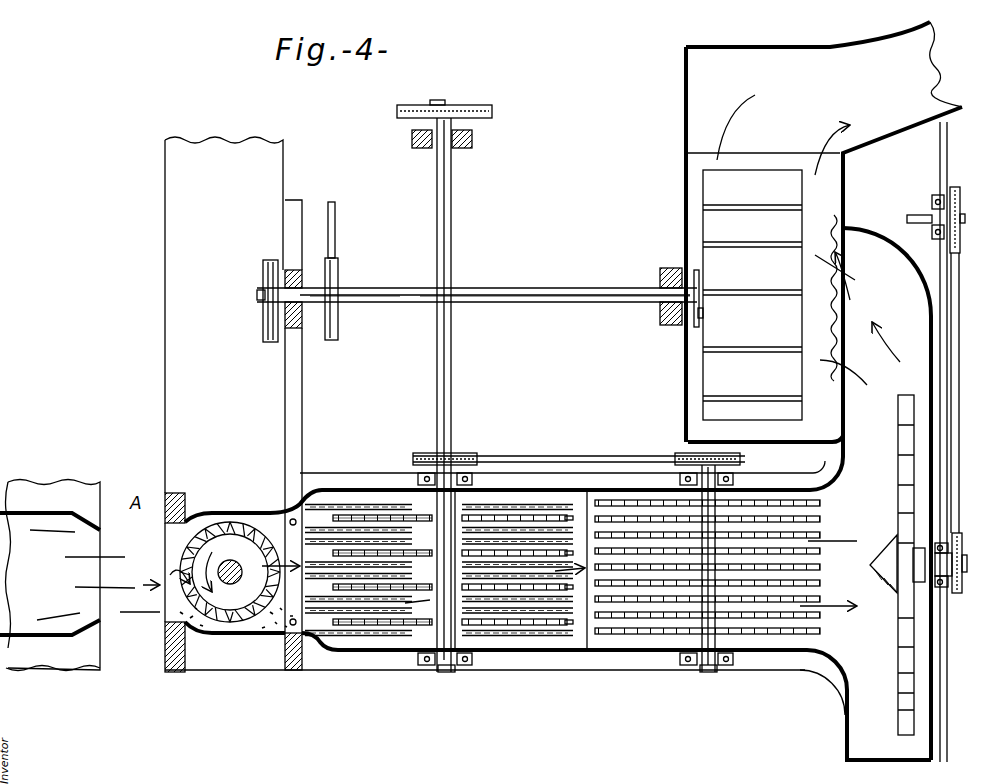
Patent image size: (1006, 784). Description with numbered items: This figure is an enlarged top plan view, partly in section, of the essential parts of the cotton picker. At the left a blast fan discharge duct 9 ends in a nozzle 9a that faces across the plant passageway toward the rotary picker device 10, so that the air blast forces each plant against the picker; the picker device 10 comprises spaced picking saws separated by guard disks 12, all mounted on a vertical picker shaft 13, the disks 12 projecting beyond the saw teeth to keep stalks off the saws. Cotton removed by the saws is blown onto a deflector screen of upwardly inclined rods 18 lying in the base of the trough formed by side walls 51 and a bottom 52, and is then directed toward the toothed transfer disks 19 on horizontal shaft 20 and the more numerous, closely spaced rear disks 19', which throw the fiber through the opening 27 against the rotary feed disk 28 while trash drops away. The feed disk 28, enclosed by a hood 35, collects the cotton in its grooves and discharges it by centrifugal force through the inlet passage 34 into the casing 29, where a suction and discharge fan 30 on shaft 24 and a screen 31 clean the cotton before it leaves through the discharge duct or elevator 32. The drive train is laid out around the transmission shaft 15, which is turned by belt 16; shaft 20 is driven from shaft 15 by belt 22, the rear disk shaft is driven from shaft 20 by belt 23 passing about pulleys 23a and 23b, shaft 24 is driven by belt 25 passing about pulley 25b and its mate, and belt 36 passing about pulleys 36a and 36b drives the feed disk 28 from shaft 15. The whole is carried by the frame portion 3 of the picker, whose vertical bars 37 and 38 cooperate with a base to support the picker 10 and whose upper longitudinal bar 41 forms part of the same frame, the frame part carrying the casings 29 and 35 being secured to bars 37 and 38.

The frame portion of the picker 3 is at (284, 215).
The discharge duct 9 is at (42, 512).
The nozzle 9a is at (80, 574).
The rotary picker device 10 is at (226, 530).
The guard disks 12 is at (240, 632).
The picker shaft 13 is at (231, 561).
The transmission shaft 15 is at (915, 215).
The belt 16 is at (262, 270).
The upwardly inclined rods 18 is at (357, 504).
The toothed transfer disks 19 is at (453, 608).
The toothed transfer disks 19' is at (726, 600).
The horizontal shaft 20 is at (453, 232).
The belt 22 is at (470, 108).
The belt 23 is at (570, 456).
The pulley 23a is at (465, 453).
The pulley 23b is at (742, 463).
The shaft 24 is at (591, 288).
The belt 25 is at (336, 238).
The pulley 25b is at (340, 284).
The opening 27 is at (857, 583).
The rotary feed disk 28 is at (901, 442).
The casing 29 is at (684, 213).
The suction and discharge fan 30 is at (752, 295).
The screen 31 is at (832, 323).
The discharge duct or elevator 32 is at (824, 125).
The inlet passage 34 is at (887, 494).
The hood 35 is at (858, 724).
The belt 36 is at (953, 440).
The pulley 36a is at (975, 184).
The pulley 36b is at (961, 596).
The vertical bar 37 is at (300, 333).
The vertical bar 38 is at (178, 494).
The horizontal longitudinal bar 41 is at (200, 381).
The side walls 51 is at (634, 488).
The bottom 52 is at (421, 640).